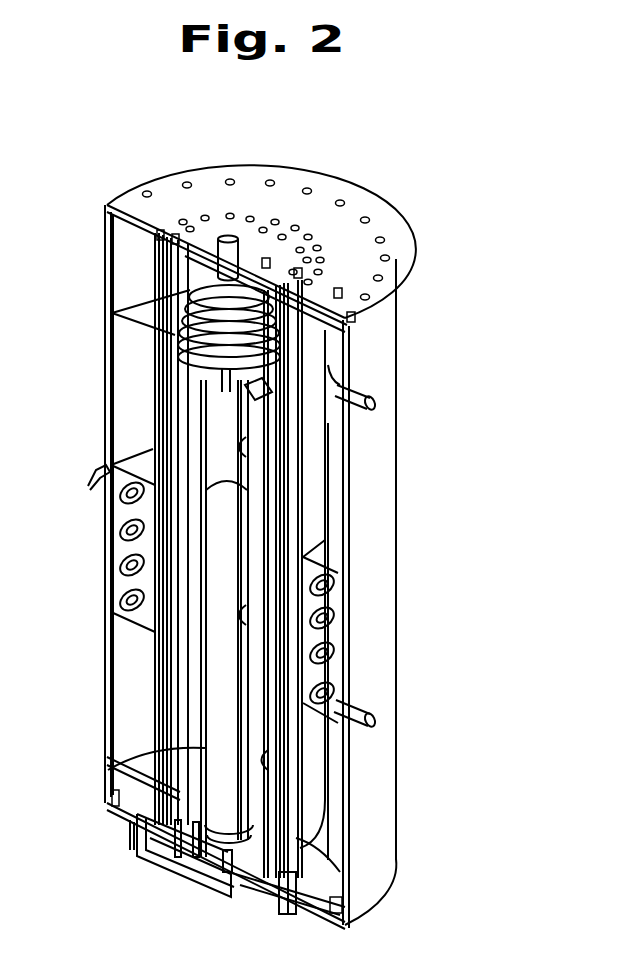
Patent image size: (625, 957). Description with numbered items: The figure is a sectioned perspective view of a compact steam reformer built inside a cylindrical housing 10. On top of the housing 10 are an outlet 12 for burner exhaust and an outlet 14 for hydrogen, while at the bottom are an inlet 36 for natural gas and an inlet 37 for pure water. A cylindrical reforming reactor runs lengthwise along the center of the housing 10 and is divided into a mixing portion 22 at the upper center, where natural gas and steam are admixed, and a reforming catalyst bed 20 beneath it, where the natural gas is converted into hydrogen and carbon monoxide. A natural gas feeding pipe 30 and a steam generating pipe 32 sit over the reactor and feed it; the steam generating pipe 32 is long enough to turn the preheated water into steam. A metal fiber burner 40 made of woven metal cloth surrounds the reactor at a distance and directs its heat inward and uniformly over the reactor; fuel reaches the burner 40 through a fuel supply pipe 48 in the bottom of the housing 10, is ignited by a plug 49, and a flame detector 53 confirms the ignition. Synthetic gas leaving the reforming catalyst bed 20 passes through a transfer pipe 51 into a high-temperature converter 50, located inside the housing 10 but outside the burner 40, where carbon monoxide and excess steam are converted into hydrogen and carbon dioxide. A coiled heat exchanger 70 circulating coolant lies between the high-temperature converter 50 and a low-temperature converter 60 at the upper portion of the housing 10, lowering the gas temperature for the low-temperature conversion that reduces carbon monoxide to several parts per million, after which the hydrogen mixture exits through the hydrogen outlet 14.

The cylindrical housing 10 is at (370, 193).
The outlet for burner exhaust 12 is at (228, 236).
The outlet for hydrogen 14 is at (382, 386).
The reforming catalyst bed 20 is at (285, 633).
The mixing portion 22 is at (285, 468).
The natural gas feeding pipe 30 is at (190, 286).
The steam generating pipe 32 is at (185, 365).
The inlet for natural gas 36 is at (293, 915).
The inlet for pure water 37 is at (286, 912).
The metal fiber burner 40 is at (262, 766).
The fuel supply pipe 48 is at (172, 863).
The plug 49 is at (205, 868).
The high-temperature converter 50 is at (120, 690).
The transfer pipe 51 is at (135, 850).
The flame detector 53 is at (256, 892).
The low-temperature converter 60 is at (122, 433).
The coiled heat exchanger 70 is at (120, 518).